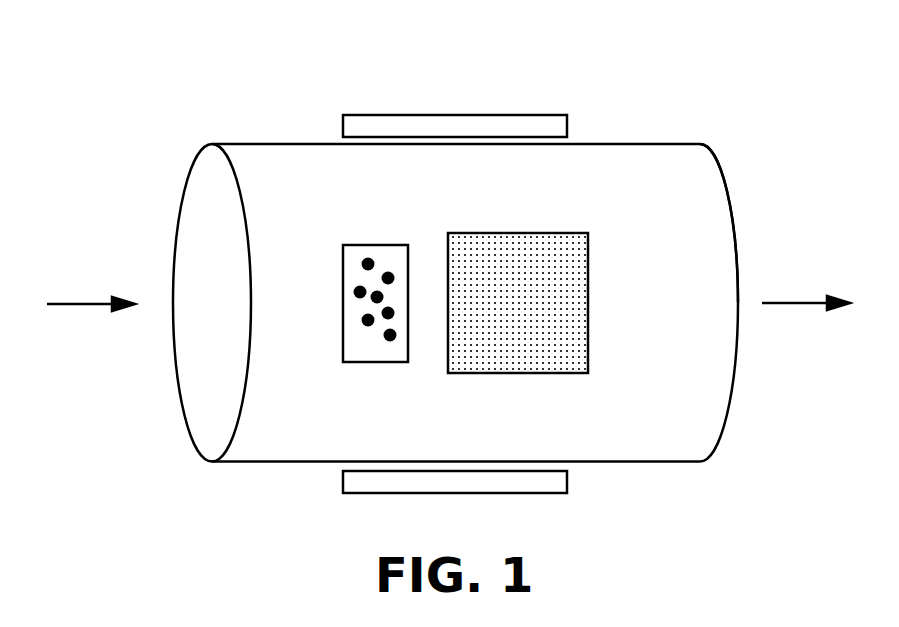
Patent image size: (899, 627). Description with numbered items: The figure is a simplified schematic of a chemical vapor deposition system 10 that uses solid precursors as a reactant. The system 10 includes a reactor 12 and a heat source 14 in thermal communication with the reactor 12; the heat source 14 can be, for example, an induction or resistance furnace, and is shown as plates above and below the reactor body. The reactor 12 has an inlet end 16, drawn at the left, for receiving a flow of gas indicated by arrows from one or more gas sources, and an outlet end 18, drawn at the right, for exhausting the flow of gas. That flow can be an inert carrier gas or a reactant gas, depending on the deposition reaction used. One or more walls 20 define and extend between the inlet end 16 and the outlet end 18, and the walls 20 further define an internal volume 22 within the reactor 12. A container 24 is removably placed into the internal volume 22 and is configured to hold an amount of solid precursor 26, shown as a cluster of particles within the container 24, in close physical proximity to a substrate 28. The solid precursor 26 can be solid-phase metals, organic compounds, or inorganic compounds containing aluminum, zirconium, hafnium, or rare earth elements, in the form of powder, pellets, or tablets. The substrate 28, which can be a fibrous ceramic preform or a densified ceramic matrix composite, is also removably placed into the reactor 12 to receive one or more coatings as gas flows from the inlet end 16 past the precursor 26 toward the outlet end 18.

The CVD system 10 is at (242, 92).
The reactor 12 is at (637, 128).
The heat source 14 is at (508, 113).
The inlet end 16 is at (175, 230).
The outlet end 18 is at (728, 195).
The walls 20 is at (283, 463).
The internal volume 22 is at (456, 434).
The container 24 is at (362, 247).
The solid precursor 26 is at (385, 338).
The substrate 28 is at (590, 310).